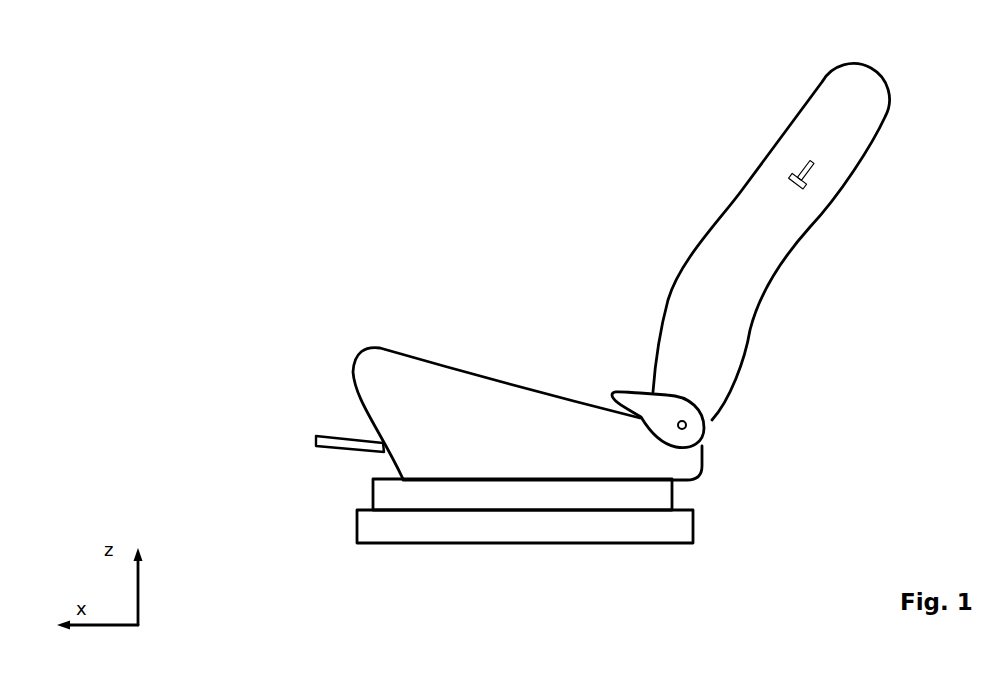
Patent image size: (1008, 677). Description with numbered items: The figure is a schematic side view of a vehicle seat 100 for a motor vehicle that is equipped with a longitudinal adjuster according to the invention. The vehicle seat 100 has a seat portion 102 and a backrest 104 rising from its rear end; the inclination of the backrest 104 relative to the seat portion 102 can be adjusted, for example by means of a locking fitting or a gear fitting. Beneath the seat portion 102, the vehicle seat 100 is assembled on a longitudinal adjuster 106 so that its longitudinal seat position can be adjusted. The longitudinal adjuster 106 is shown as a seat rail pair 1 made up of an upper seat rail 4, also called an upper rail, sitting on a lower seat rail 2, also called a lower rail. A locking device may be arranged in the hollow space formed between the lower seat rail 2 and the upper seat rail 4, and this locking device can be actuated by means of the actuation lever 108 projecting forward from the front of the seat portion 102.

The vehicle seat 100 is at (431, 139).
The seat portion 102 is at (487, 403).
The backrest 104 is at (737, 213).
The longitudinal adjuster 106 is at (322, 510).
The seat rail pair 1 is at (532, 488).
The actuation lever 108 is at (340, 441).
The upper seat rail 4 is at (655, 498).
The lower seat rail 2 is at (655, 530).